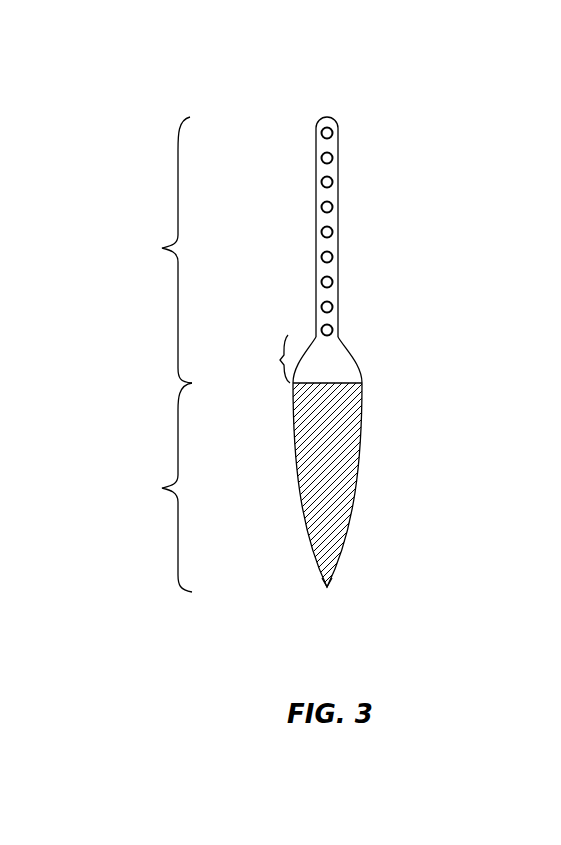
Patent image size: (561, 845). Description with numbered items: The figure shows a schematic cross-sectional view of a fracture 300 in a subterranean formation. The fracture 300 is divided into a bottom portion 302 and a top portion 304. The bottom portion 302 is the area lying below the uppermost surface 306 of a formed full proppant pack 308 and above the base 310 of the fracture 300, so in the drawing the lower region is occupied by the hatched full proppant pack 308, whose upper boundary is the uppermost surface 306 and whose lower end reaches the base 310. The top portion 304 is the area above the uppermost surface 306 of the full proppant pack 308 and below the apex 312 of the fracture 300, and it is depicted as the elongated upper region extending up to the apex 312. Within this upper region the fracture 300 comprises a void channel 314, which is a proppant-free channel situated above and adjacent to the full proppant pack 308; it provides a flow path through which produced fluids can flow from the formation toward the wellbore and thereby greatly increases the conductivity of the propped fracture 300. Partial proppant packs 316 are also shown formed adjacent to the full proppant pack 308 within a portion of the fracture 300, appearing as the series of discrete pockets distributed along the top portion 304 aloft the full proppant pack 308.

The fracture 300 is at (157, 53).
The bottom portion 302 is at (162, 488).
The top portion 304 is at (162, 249).
The uppermost surface 306 is at (348, 379).
The full proppant pack 308 is at (343, 455).
The base 310 is at (327, 589).
The apex 312 is at (329, 115).
The void channel 314 is at (280, 360).
The partial proppant packs 316 is at (322, 323).